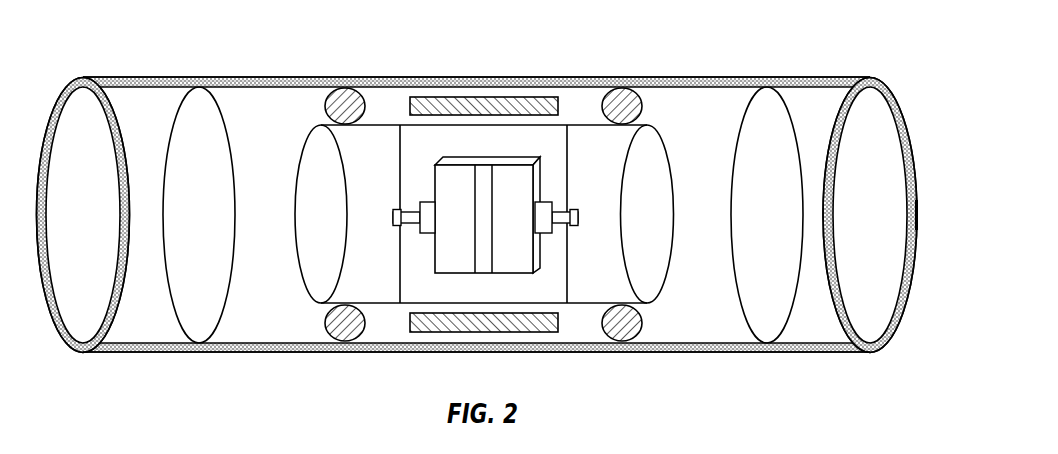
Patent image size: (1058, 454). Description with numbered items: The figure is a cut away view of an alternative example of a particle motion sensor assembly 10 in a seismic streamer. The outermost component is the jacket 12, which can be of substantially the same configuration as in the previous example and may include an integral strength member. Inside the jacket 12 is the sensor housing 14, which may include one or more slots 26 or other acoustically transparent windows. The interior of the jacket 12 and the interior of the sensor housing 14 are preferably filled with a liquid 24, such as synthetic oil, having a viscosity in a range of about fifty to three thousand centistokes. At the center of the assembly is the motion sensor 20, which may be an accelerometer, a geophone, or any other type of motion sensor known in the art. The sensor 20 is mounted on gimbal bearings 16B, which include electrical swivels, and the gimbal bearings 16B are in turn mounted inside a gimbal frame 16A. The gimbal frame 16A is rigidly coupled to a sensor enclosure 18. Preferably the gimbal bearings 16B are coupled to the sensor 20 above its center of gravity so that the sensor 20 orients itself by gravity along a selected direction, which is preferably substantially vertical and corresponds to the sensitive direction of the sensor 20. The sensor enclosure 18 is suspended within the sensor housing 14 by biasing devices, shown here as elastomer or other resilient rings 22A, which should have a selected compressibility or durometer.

The fluid handling device 10 is at (712, 47).
The jacket 12 is at (180, 77).
The sensor housing 14 is at (178, 306).
The gimbal frame 16A is at (400, 180).
The gimbal bearings 16B is at (424, 236).
The sensor enclosure 18 is at (303, 283).
The motion sensor 20 is at (493, 193).
The resilient rings 22A is at (345, 86).
The liquid 24 is at (710, 323).
The slots 26 is at (440, 97).